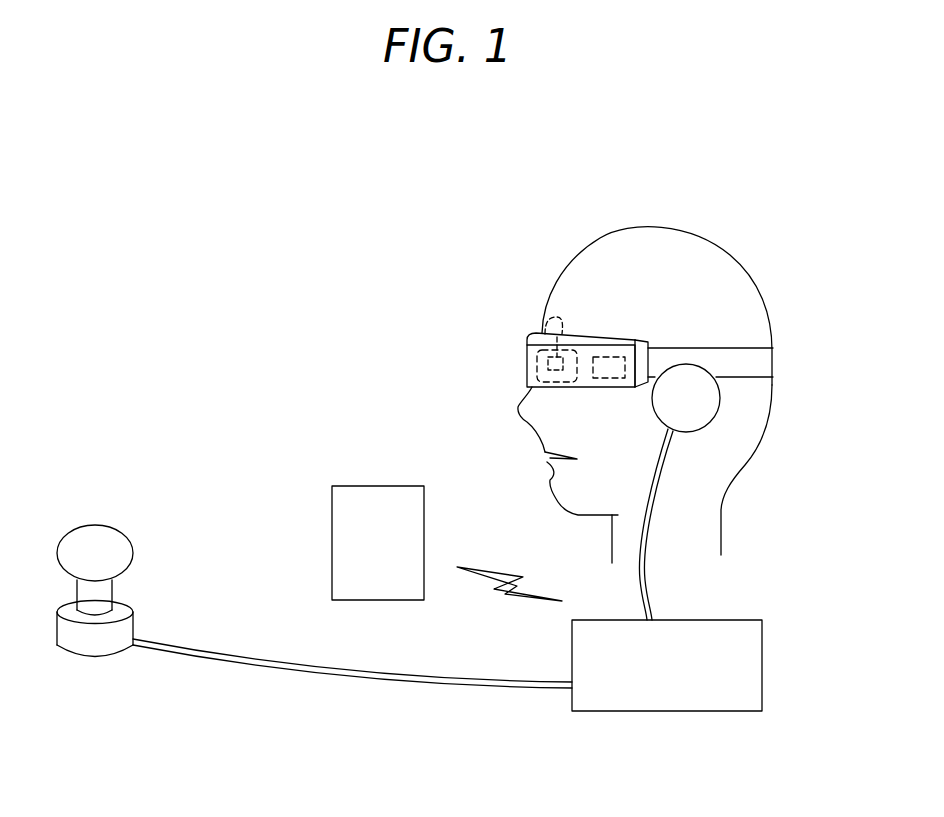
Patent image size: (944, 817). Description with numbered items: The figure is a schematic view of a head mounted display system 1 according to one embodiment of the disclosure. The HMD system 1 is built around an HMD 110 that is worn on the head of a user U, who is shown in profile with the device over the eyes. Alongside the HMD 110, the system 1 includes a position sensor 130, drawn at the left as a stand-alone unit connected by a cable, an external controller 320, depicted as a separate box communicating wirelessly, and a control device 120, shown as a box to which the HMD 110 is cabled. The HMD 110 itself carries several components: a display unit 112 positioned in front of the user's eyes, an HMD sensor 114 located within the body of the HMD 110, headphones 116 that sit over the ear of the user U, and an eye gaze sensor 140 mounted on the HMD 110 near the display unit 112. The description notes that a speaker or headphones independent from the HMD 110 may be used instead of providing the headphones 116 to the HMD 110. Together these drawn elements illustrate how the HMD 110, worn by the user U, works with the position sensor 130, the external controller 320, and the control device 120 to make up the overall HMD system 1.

The HMD system 1 is at (200, 305).
The user U is at (752, 260).
The HMD 110 is at (527, 341).
The display unit 112 is at (538, 360).
The HMD sensor 114 is at (606, 384).
The headphones 116 is at (700, 377).
The control device 120 is at (740, 633).
The position sensor 130 is at (91, 535).
The eye gaze sensor 140 is at (556, 336).
The external controller 320 is at (382, 486).